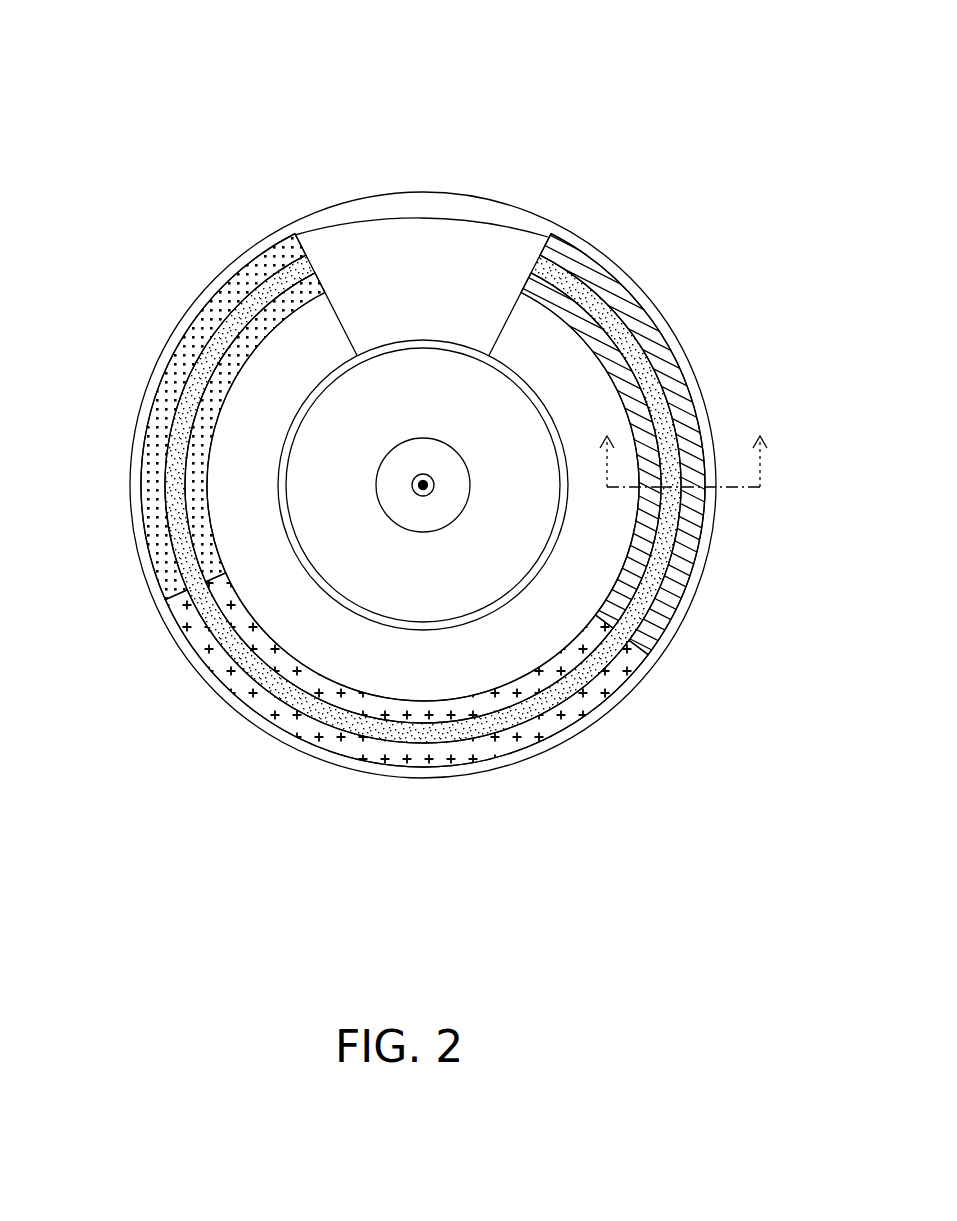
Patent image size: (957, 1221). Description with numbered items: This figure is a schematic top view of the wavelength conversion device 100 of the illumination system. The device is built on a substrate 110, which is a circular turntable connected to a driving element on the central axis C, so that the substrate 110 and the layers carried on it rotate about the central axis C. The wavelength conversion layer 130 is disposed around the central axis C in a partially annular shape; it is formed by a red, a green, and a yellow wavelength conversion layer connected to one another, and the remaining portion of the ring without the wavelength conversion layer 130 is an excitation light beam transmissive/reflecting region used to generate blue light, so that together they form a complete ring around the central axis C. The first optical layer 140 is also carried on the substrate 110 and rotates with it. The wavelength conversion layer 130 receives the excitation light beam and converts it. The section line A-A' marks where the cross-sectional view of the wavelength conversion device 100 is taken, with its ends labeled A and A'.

The wavelength conversion device 100 is at (777, 940).
The substrate 110 is at (322, 660).
The wavelength conversion layer 130 is at (110, 12).
The first optical layer 140 is at (215, 340).
The central axis C is at (434, 489).
The section line A-A' A is at (629, 441).
The section line A- A' is at (719, 441).